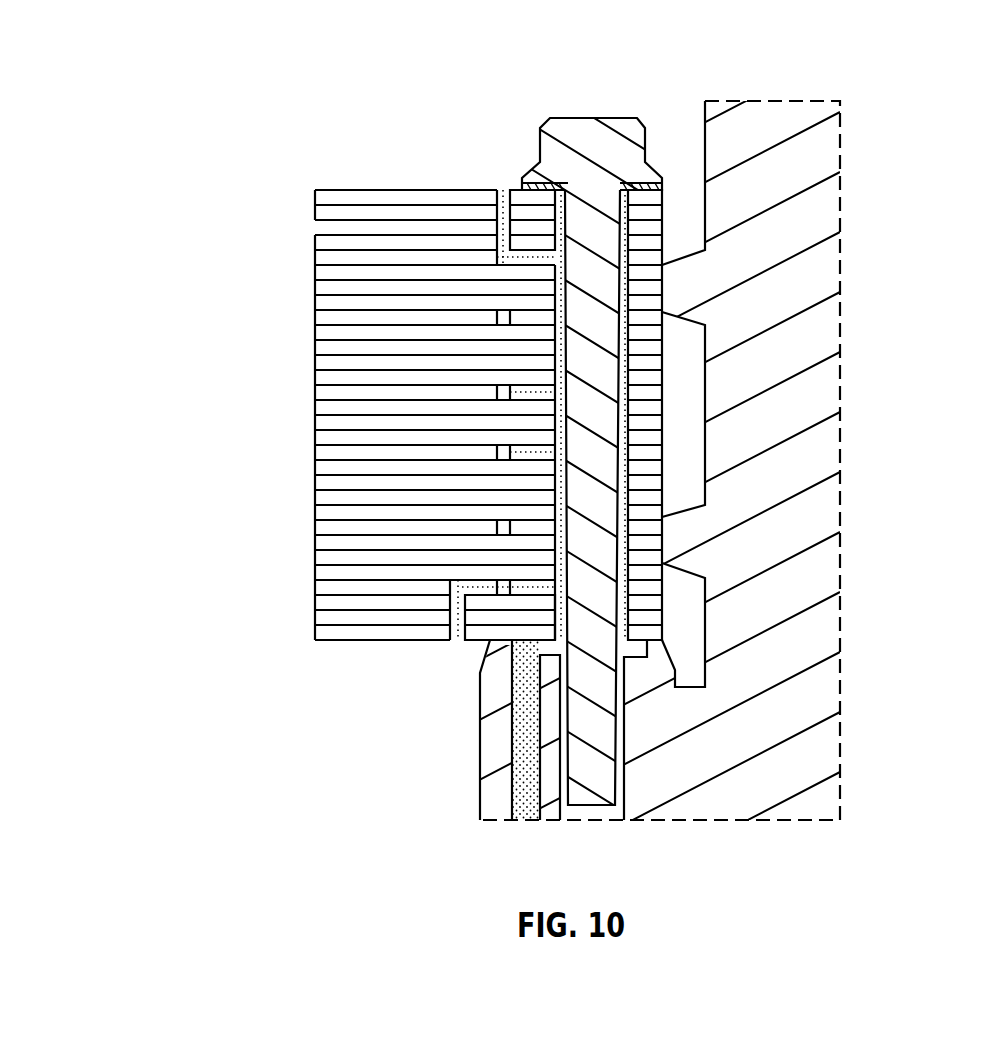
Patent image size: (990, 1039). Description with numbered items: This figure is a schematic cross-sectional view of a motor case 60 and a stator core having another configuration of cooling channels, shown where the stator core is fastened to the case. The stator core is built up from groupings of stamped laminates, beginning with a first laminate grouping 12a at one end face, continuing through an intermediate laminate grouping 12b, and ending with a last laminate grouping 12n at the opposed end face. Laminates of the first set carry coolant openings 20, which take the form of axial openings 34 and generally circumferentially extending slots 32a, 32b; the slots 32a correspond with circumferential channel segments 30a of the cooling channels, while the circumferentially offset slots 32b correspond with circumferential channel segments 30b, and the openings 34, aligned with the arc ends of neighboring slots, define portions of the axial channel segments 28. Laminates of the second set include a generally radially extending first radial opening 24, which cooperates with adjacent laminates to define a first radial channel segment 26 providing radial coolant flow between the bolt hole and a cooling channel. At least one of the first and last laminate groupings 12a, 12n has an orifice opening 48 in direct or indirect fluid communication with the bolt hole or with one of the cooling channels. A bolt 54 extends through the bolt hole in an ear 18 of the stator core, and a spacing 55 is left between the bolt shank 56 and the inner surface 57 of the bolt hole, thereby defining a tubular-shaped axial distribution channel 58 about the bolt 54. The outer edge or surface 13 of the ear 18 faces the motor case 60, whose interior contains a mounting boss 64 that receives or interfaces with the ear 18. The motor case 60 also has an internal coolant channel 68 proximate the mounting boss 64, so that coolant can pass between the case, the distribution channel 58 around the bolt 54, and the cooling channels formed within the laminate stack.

The first stator laminate grouping 12a is at (325, 198).
The laminate grouping 12b is at (325, 210).
The last stator laminate grouping 12n is at (325, 632).
The outer edge or surface of the ear 13 is at (663, 355).
The ear 18 is at (650, 228).
The coolant opening 20 is at (477, 384).
The orifice opening 48 is at (502, 250).
The first radial opening 24 is at (363, 422).
The first radial channel segment 26 is at (533, 258).
The axial channel segment 28 is at (395, 418).
The opening 34 is at (505, 235).
The circumferential channel segment 30a is at (327, 320).
The generally circumferentially extending slot 32a is at (500, 252).
The circumferential channel segment 30b is at (327, 459).
The generally circumferentially extending slot 32b is at (500, 318).
The bolt 54 is at (709, 454).
The spacing 55 is at (800, 625).
The tubular-shaped axial distribution channel 58 is at (632, 600).
The bolt shank 56 is at (723, 454).
The inner surface of the bolt hole 57 is at (620, 413).
The motor case 60 is at (820, 752).
The mounting boss 64 is at (497, 750).
The internal coolant channel 68 is at (528, 797).